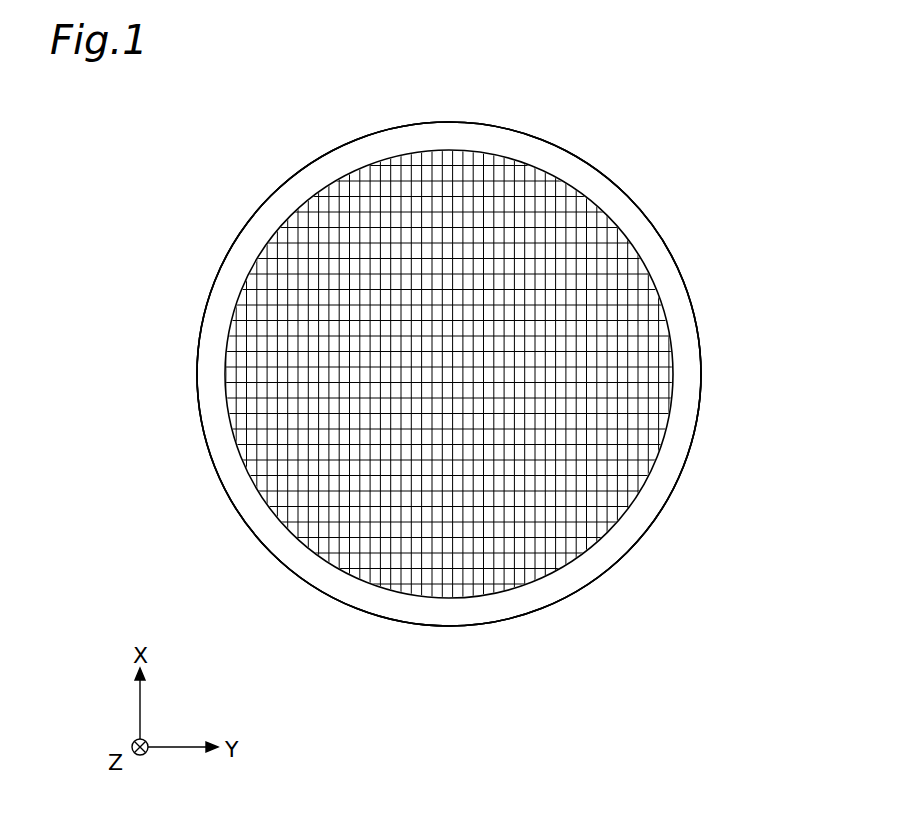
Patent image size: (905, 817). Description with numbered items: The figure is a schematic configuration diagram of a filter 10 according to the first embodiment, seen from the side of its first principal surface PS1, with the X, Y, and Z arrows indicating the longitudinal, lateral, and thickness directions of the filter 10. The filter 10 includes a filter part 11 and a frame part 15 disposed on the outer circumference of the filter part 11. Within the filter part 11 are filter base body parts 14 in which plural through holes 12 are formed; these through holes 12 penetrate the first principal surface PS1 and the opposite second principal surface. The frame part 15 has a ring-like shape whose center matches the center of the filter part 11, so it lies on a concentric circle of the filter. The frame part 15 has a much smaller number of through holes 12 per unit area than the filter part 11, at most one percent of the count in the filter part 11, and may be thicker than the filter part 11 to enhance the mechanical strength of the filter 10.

The filter 10 is at (209, 168).
The first principal surface PS1 is at (622, 208).
The filter part 11 is at (680, 333).
The through holes 12 is at (650, 390).
The filter base body parts 14 is at (600, 483).
The frame part 15 is at (583, 572).